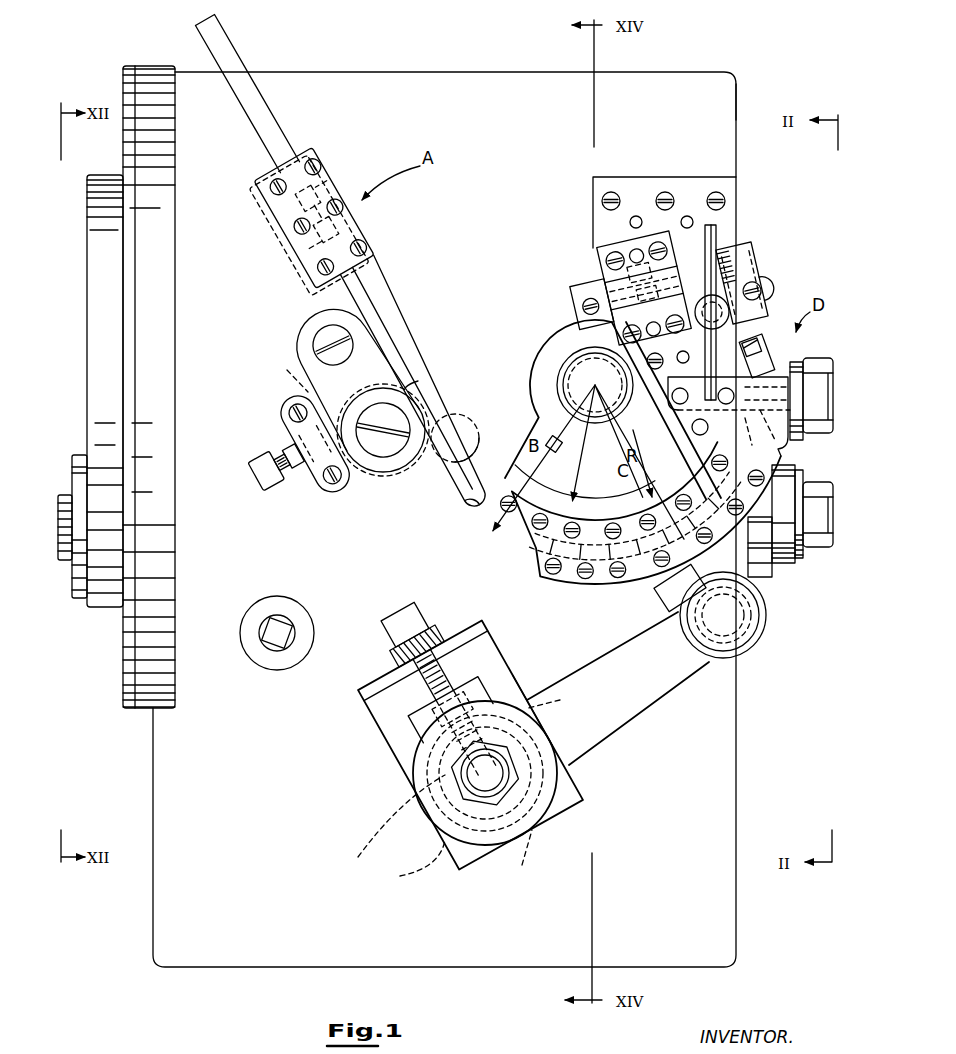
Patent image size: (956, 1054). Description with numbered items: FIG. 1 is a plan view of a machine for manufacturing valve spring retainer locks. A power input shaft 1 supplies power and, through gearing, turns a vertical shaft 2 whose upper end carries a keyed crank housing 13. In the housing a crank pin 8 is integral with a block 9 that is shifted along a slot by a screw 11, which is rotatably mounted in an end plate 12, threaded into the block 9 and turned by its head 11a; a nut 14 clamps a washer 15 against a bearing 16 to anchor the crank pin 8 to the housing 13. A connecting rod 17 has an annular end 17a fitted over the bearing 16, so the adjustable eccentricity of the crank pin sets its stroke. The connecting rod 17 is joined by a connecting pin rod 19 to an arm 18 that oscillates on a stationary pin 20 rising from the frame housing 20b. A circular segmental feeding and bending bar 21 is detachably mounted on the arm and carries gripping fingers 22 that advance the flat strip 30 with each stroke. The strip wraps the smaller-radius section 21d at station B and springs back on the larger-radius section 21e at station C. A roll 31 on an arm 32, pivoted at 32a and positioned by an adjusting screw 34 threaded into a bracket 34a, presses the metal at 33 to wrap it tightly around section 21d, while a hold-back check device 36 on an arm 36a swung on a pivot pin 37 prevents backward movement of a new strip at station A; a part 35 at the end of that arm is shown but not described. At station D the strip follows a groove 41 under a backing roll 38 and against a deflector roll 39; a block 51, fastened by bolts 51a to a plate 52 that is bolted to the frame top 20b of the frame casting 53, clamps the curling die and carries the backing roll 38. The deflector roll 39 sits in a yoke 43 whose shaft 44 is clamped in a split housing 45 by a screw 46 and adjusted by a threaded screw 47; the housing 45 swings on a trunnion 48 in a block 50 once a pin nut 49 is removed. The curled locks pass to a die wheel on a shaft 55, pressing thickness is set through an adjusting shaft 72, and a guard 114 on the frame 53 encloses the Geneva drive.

The power input shaft 1 is at (66, 575).
The vertical shaft 2 is at (550, 697).
The crank pin 8 is at (530, 740).
The block 9 is at (410, 861).
The screw 11 is at (490, 648).
The head 11a is at (430, 623).
The end plate 12 is at (352, 700).
The crank housing 13 is at (372, 740).
The nut 14 is at (575, 760).
The washer 15 is at (410, 770).
The bearing 16 is at (390, 824).
The connecting rod 17 is at (627, 740).
The annular end 17a is at (522, 860).
The arm 18 is at (662, 590).
The connecting pin rod 19 is at (752, 642).
The stationary pin 20 is at (562, 345).
The frame housing 20b is at (503, 75).
The feeding and bending bar 21 is at (765, 560).
The arcuate section 21d is at (585, 443).
The section 21e is at (607, 430).
The gripping fingers 22 is at (606, 560).
The flat strip 30 is at (278, 118).
The roll 31 is at (420, 380).
The arm 32 is at (298, 352).
The pivotal support 32a is at (325, 338).
The roll 33 is at (425, 405).
The adjusting screw 34 is at (263, 455).
The bracket 34a is at (322, 486).
The arm end 35 is at (533, 547).
The check device 36 is at (295, 255).
The arm 36a is at (405, 315).
The pivotal support pin 37 is at (478, 428).
The backing roll 38 is at (790, 440).
The deflector roll 39 is at (766, 344).
The curved groove 41 is at (790, 465).
The yoke 43 is at (782, 360).
The shaft 44 is at (760, 272).
The housing 45 is at (752, 258).
The screw 46 is at (762, 293).
The threaded screw 47 is at (714, 252).
The trunnion support 48 is at (670, 254).
The pin nut 49 is at (702, 300).
The block 50 is at (605, 258).
The block 51 is at (788, 416).
The bolts 51a is at (670, 379).
The plate 52 is at (652, 182).
The frame casting 53 is at (738, 102).
The shaft 55 is at (812, 368).
The adjusting shaft 72 is at (270, 648).
The guard 114 is at (123, 692).